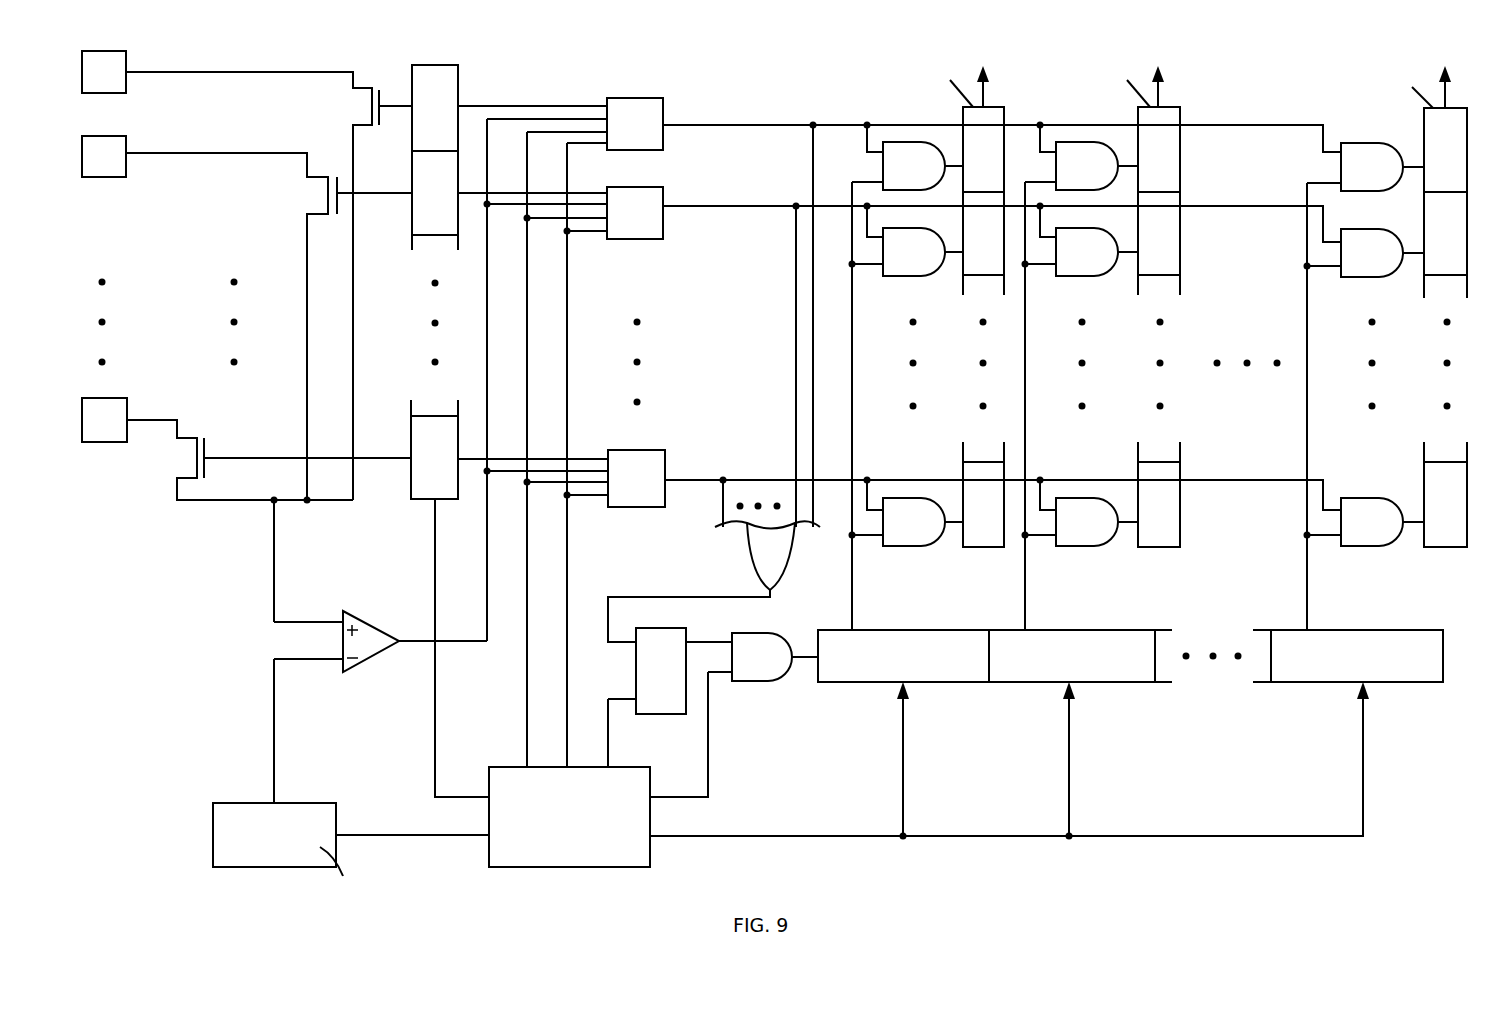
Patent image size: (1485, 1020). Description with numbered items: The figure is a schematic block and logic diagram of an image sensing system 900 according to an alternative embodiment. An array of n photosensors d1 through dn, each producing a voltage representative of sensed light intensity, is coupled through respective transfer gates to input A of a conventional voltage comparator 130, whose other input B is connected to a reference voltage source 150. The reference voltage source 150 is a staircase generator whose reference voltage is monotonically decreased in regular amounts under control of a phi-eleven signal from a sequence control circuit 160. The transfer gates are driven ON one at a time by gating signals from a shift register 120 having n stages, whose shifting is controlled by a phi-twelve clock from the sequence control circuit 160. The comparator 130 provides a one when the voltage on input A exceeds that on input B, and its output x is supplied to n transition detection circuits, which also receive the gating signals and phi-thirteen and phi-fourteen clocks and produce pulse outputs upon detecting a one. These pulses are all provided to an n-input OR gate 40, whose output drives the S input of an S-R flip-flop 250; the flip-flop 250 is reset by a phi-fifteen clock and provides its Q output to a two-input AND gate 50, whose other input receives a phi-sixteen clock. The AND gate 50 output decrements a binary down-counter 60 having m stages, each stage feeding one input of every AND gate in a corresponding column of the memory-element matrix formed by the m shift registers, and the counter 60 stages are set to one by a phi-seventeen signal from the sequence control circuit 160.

The image sensing system 900 is at (1042, 884).
The shift register 120 is at (440, 63).
The voltage comparator 130 is at (368, 620).
The reference voltage source 150 is at (310, 802).
The sequence control circuit 160 is at (650, 852).
The S-R flip-flop 250 is at (670, 714).
The OR gate 40 is at (795, 547).
The AND gate 50 is at (783, 632).
The binary down-counter 60 is at (1420, 682).